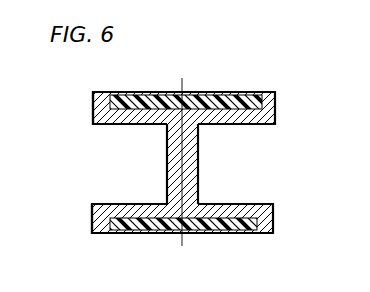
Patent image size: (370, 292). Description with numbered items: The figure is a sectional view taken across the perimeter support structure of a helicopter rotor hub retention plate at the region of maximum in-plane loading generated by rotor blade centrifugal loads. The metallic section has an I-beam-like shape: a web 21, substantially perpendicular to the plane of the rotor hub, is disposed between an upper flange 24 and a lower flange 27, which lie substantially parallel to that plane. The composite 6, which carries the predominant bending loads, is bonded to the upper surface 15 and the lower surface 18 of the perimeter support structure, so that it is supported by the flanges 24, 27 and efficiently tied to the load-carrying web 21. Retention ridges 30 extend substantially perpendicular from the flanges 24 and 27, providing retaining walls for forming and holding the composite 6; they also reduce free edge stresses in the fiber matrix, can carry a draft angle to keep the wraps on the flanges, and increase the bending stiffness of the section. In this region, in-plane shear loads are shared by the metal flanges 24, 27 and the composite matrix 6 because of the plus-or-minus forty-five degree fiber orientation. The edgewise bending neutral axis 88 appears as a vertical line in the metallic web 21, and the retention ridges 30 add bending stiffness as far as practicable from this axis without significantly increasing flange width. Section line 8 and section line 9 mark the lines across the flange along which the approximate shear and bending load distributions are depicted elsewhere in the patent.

The composite 6 is at (150, 166).
The section line 8- 8 is at (184, 77).
The section line 9- 9 is at (182, 95).
The upper surface 15 is at (227, 103).
The lower surface 18 is at (224, 222).
The web 21 is at (167, 150).
The upper flange 24 is at (115, 125).
The lower flange 27 is at (112, 204).
The retention ridges 30 is at (100, 233).
The edgewise bending neutral axis 88 is at (186, 88).